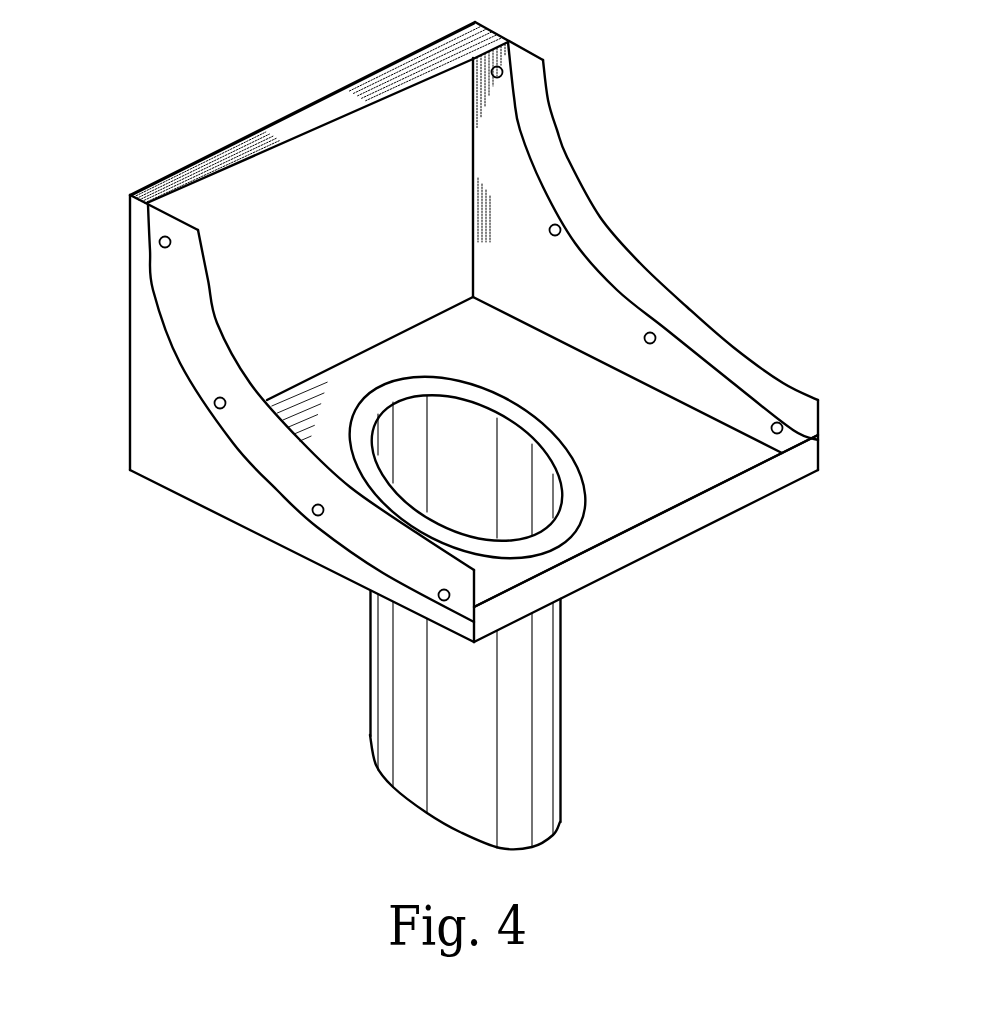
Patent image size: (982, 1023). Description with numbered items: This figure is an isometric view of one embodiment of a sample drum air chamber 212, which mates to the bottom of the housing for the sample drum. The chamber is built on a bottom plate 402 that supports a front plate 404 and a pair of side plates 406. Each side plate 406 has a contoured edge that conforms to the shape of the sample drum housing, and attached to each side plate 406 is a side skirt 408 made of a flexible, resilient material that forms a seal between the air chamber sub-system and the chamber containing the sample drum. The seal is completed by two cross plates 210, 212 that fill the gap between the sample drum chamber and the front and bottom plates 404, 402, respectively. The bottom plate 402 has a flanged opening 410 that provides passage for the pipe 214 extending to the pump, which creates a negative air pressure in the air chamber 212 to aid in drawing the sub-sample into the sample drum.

The cross plate 210 is at (287, 152).
The sample drum air chamber 212 is at (130, 352).
The pipe 214 is at (365, 707).
The bottom plate 402 is at (566, 394).
The front plate 404 is at (362, 302).
The side plate 406 is at (145, 446).
The side skirt 408 is at (205, 275).
The flanged opening 410 is at (585, 507).